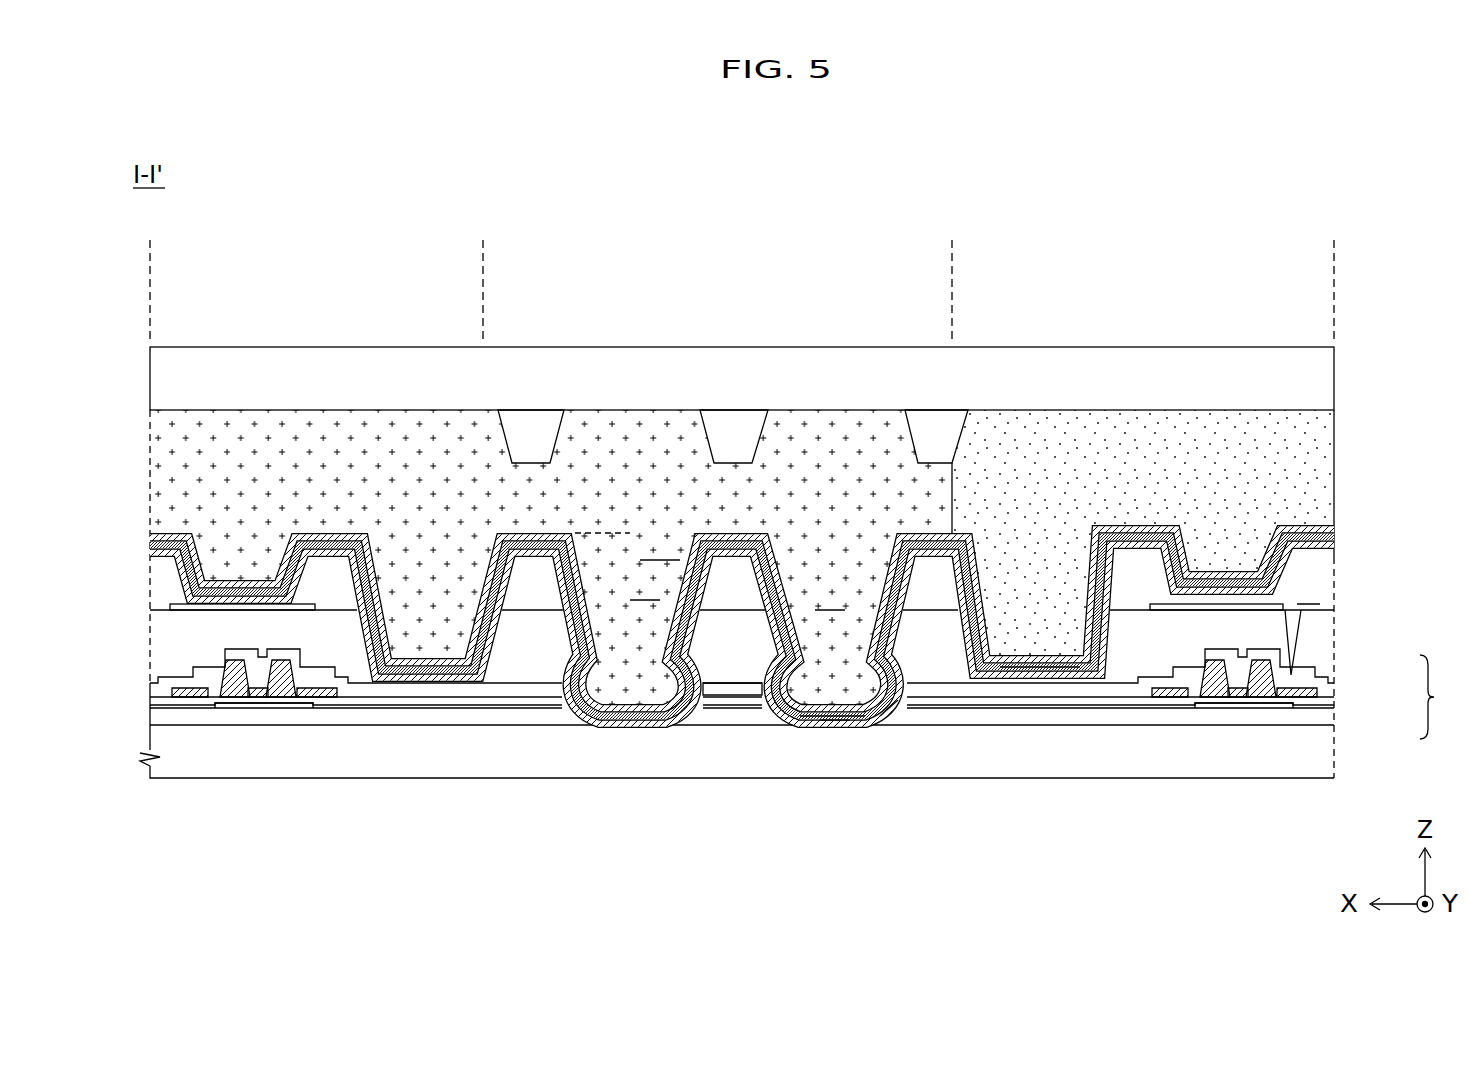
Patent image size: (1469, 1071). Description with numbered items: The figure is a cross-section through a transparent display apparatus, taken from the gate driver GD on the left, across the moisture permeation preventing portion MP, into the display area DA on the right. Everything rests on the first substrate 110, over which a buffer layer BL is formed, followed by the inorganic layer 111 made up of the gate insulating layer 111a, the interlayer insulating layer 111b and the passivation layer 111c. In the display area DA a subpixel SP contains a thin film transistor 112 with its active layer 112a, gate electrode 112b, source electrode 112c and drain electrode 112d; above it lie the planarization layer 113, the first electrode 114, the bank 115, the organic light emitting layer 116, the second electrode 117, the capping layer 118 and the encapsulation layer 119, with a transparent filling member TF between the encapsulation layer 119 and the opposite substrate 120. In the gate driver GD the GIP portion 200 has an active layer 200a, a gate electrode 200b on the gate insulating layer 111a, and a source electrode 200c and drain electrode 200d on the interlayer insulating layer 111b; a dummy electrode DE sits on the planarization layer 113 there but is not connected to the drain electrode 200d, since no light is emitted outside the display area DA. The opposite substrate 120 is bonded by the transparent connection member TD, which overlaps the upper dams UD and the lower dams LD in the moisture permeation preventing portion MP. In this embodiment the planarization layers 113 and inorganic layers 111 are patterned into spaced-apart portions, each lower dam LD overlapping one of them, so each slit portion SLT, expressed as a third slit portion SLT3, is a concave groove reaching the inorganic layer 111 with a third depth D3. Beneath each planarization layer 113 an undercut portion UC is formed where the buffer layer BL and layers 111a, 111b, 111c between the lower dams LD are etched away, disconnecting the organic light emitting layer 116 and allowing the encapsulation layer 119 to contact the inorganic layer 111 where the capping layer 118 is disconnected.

The first substrate 110 is at (1326, 753).
The buffer layer BL is at (1326, 731).
The inorganic layer 111 is at (1444, 697).
The gate insulating layer 111a is at (1326, 663).
The interlayer insulating layer 111b is at (1326, 707).
The passivation layer 111c is at (1326, 689).
The thin film transistor 112 is at (1231, 779).
The active layer 112a is at (1220, 708).
The gate electrode 112b is at (1258, 697).
The source electrode 112c is at (1217, 700).
The drain electrode 112d is at (1282, 697).
The GIP portion 200 is at (249, 779).
The active layer 200a is at (240, 708).
The gate electrode 200b is at (278, 697).
The source electrode 200c is at (237, 700).
The drain electrode 200d is at (302, 697).
The planarization layer 113 is at (1326, 634).
The first electrode 114 is at (1312, 600).
The bank 115 is at (1326, 578).
The organic light emitting layer 116 is at (833, 724).
The second electrode 117 is at (1012, 674).
The capping layer 118 is at (849, 727).
The encapsulation layer 119 is at (903, 722).
The opposite substrate 120 is at (1326, 378).
The lower dam LD is at (731, 590).
The dummy electrode DE is at (172, 606).
The gate driver GD is at (483, 234).
The moisture permeation preventing portion MP is at (952, 234).
The display area DA is at (1334, 234).
The upper dam UD is at (735, 430).
The transparent connection member TD is at (822, 445).
The transparent filling member TF is at (1068, 490).
The subpixel SP is at (1220, 528).
The slit portion SLT is at (663, 490).
The third slit portion SLT3 is at (652, 572).
The third depth D3 is at (622, 535).
The undercut portion UC is at (664, 691).